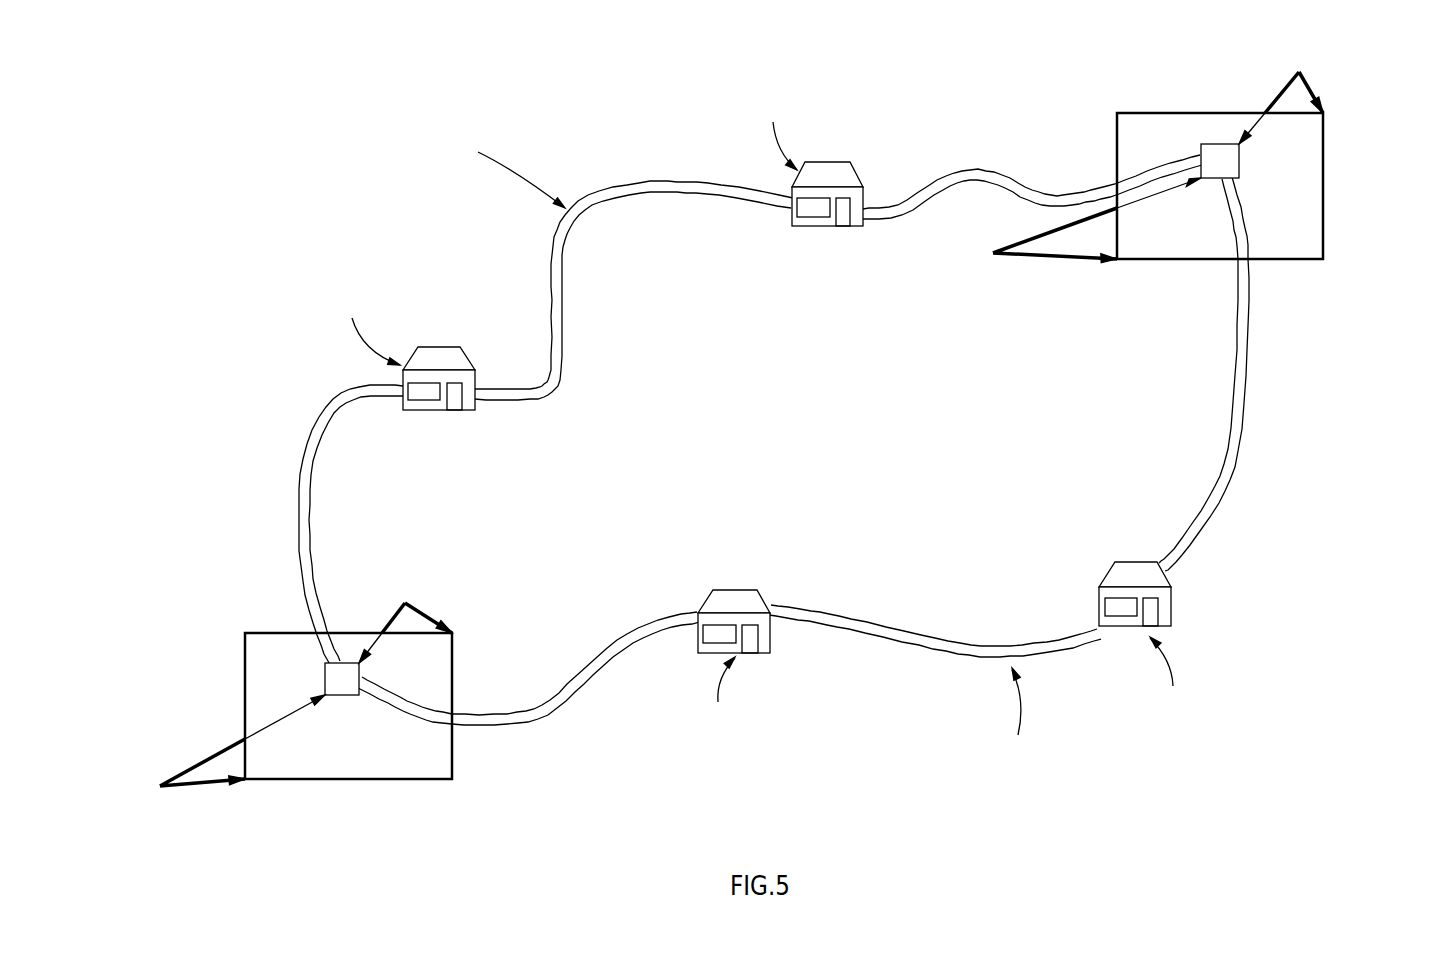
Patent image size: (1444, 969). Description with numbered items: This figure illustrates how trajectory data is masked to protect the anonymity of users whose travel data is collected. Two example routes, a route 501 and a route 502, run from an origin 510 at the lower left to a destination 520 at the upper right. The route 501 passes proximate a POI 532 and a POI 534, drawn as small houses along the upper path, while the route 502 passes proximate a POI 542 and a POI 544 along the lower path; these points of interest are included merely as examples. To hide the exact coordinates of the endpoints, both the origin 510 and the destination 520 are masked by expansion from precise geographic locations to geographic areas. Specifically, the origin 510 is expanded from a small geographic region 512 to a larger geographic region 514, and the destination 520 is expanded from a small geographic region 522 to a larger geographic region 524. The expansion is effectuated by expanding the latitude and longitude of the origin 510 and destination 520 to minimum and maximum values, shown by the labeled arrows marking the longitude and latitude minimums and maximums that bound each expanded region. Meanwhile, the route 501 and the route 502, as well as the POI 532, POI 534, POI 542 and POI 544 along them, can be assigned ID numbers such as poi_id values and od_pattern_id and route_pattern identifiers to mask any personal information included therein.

The route 501 is at (645, 198).
The route 502 is at (857, 615).
The origin 510 is at (215, 706).
The geographic region 512 is at (342, 678).
The geographic region 514 is at (424, 757).
The destination 520 is at (1406, 207).
The geographic region 522 is at (1228, 160).
The geographic region 524 is at (1190, 237).
The POI 532 is at (437, 410).
The POI 534 is at (815, 226).
The POI 542 is at (733, 590).
The POI 544 is at (1135, 562).